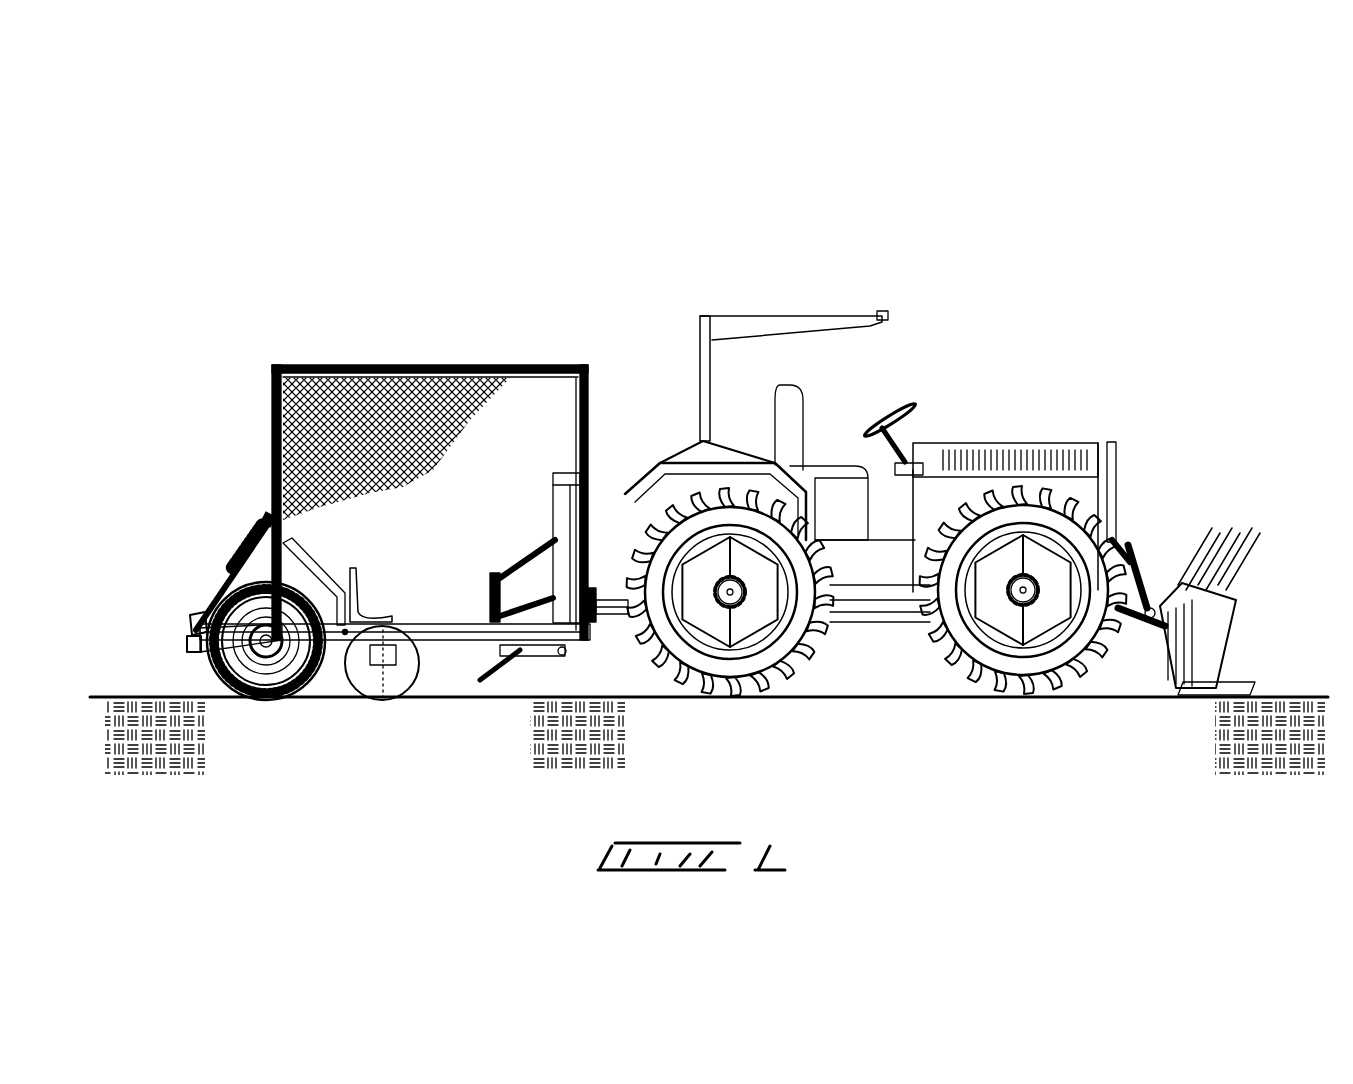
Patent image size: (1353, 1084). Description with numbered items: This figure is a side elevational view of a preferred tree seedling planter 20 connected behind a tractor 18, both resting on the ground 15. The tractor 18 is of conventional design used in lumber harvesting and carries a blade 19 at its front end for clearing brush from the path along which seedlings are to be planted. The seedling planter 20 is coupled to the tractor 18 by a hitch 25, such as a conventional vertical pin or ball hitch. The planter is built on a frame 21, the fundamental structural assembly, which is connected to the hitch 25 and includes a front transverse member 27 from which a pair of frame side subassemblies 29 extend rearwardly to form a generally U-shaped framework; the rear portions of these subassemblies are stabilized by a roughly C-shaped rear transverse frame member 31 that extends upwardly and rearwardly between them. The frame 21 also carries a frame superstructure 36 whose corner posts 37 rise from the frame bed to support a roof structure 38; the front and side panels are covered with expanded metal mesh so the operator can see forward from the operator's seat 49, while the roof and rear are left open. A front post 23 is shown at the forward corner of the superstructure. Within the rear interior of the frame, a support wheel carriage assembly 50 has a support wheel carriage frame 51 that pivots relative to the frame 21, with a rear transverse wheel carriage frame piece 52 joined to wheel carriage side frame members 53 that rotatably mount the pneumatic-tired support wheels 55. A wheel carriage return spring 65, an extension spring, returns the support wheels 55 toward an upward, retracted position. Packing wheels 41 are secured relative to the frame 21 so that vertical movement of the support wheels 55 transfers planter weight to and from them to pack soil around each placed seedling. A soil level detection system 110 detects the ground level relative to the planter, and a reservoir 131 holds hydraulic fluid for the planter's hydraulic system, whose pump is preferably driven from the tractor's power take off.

The ground surface 15 is at (862, 700).
The tractor 18 is at (990, 404).
The blade 19 is at (1212, 652).
The tree seedling planter 20 is at (425, 436).
The frame 21 is at (434, 616).
The front post 23 is at (588, 360).
The hitch 25 is at (605, 624).
The front transverse member 27 is at (565, 652).
The frame side subassemblies 29 is at (442, 646).
The rear transverse frame member 31 is at (306, 562).
The frame superstructure 36 is at (296, 362).
The corner posts 37 is at (272, 400).
The roof structure 38 is at (378, 362).
The packing wheels 41 is at (398, 682).
The operator's seat 49 is at (358, 580).
The support wheel carriage assembly 50 is at (190, 590).
The support wheel carriage frame 51 is at (186, 632).
The rear transverse wheel carriage frame piece 52 is at (185, 648).
The wheel carriage side frame members 53 is at (208, 650).
The support wheels 55 is at (270, 700).
The wheel carriage return spring 65 is at (246, 552).
The soil level detection system 110 is at (494, 678).
The reservoir 131 is at (560, 512).